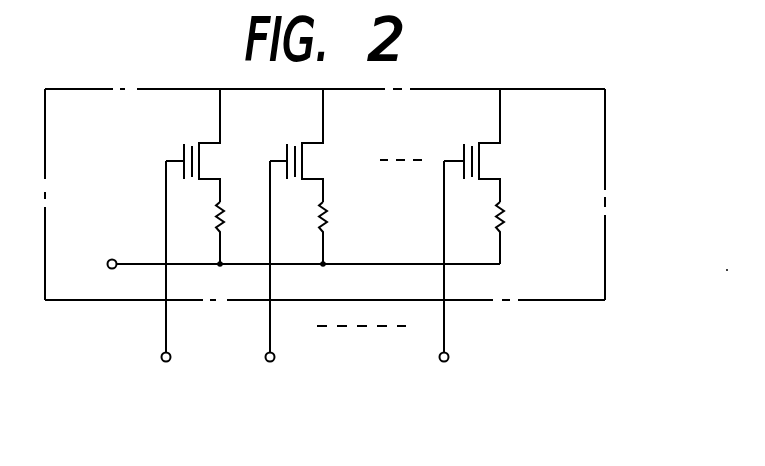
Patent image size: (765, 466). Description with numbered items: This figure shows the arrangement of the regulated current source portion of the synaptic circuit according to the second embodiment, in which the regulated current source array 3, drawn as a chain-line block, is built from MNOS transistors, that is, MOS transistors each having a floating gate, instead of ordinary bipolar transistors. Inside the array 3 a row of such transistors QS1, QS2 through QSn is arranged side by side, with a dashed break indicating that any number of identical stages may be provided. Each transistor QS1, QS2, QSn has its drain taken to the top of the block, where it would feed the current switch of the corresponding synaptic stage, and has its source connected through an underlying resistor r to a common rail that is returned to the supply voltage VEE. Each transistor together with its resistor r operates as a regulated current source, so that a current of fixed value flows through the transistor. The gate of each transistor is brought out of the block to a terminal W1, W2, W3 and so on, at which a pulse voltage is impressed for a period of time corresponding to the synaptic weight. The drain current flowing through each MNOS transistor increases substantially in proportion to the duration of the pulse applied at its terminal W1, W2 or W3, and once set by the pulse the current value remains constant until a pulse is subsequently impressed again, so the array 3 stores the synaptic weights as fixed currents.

The regulated current source array 3 is at (605, 162).
The MNOS transistor QS1 is at (193, 145).
The MNOS transistor QS2 is at (296, 145).
The MNOS transistor QSn is at (472, 145).
The resistor r is at (367, 234).
The synaptic weight input W1 is at (185, 266).
The synaptic weight input W2 is at (288, 266).
The synaptic weight input W3 is at (463, 266).
The supply voltage VEE is at (281, 262).